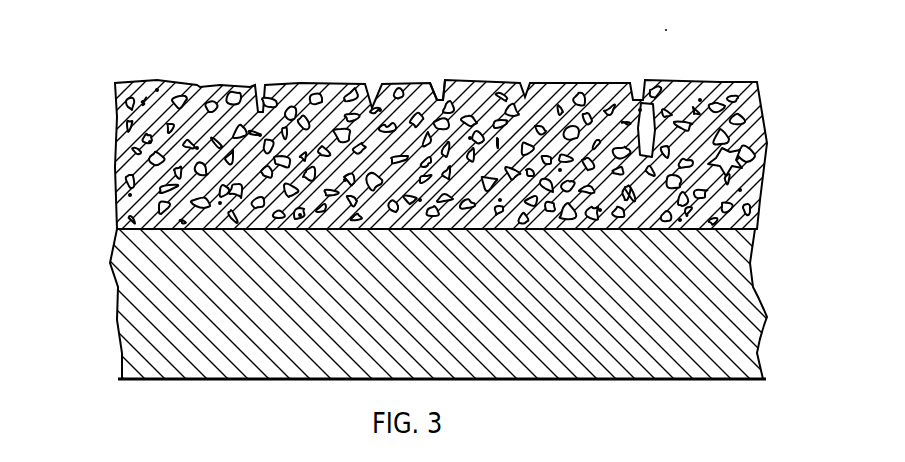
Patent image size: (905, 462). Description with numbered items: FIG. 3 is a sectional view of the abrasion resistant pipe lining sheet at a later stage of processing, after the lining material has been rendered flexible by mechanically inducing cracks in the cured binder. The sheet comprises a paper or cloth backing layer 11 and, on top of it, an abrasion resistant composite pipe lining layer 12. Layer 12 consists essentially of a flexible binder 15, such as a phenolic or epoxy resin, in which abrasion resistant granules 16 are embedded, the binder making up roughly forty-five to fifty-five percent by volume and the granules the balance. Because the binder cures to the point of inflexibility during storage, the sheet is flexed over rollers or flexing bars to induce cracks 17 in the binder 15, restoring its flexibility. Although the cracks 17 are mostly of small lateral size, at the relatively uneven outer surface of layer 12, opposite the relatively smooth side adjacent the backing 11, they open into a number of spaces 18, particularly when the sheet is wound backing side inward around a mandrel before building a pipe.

The backing layer 11 is at (168, 308).
The composite pipe lining layer 12 is at (452, 128).
The flexible binder 15 is at (702, 112).
The abrasion resistant granules 16 is at (732, 165).
The cracks 17 is at (198, 148).
The spaces 18 is at (438, 90).